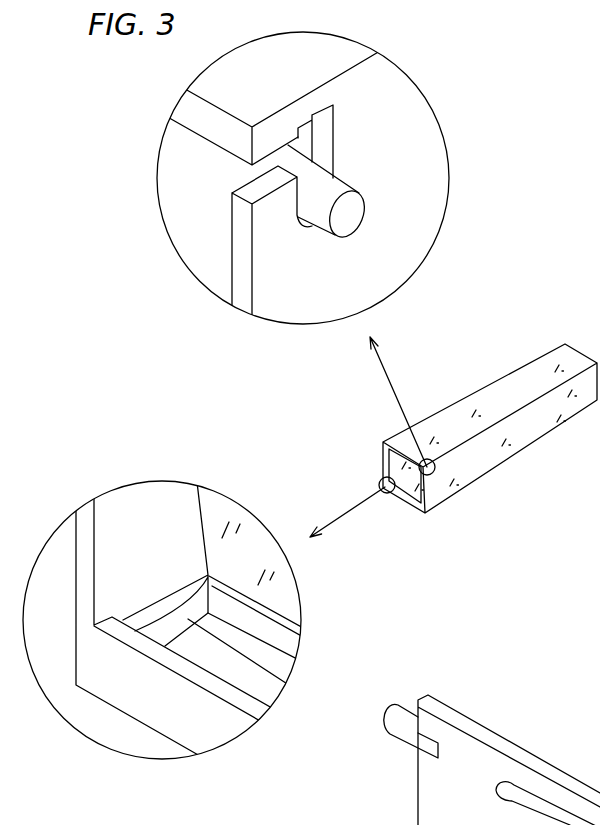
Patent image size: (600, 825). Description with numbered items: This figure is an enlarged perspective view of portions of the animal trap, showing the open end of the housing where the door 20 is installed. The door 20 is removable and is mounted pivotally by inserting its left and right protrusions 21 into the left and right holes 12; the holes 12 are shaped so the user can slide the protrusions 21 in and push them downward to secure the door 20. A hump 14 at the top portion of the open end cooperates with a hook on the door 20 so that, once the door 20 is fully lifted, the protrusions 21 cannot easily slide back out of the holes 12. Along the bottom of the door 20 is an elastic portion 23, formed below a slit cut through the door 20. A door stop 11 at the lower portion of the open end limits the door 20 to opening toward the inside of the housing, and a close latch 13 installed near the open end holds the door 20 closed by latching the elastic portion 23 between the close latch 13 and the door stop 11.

The door stop 11 is at (152, 688).
The hole 12 is at (232, 302).
The close latch 13 is at (258, 665).
The hump 14 is at (313, 123).
The door 20 is at (285, 586).
The protrusion 21 is at (330, 187).
The elastic portion 23 is at (288, 640).